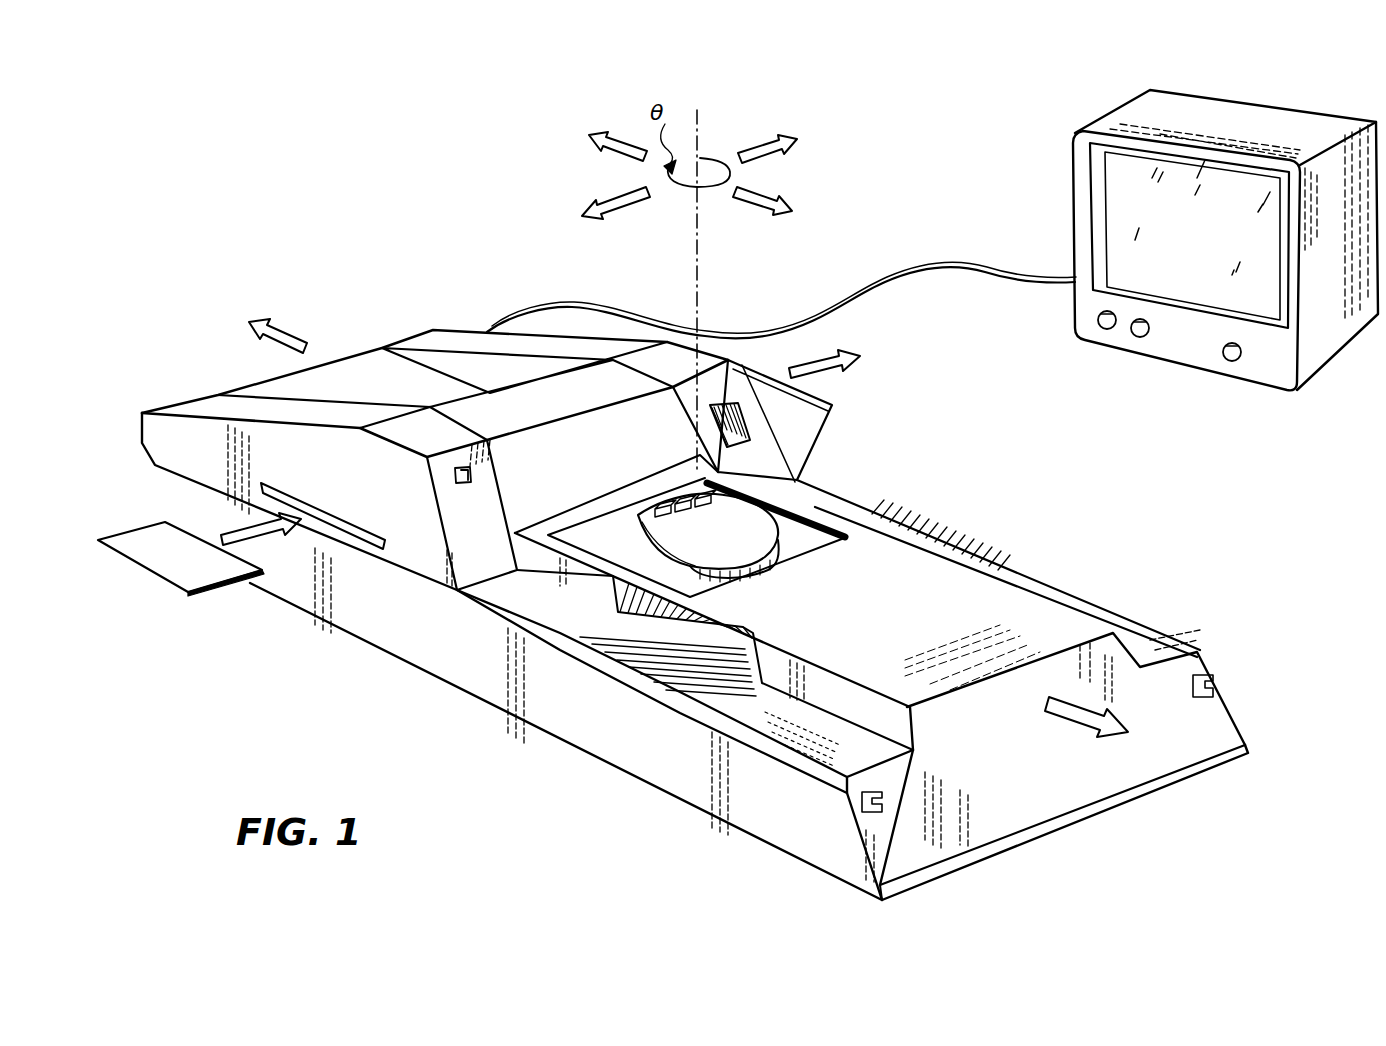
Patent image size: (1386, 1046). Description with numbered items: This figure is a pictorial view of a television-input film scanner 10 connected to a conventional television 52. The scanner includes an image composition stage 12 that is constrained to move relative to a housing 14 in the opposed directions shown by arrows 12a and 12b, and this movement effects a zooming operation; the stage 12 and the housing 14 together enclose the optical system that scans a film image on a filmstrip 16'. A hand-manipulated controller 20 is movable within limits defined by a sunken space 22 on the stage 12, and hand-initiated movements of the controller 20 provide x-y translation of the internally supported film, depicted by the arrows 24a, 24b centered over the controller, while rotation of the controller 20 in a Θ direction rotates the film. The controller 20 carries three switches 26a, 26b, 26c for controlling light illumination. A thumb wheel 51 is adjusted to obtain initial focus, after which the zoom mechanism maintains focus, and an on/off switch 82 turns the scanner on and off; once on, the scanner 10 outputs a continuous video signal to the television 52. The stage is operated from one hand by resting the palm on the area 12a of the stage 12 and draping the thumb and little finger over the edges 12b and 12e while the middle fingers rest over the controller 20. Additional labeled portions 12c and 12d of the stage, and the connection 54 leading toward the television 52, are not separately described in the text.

The television-input film scanner 10 is at (349, 656).
The image composition stage 12 is at (990, 627).
The palm-rest area of the stage 12a is at (295, 330).
The edge of the stage 12b is at (1060, 706).
The top surface of housing 12c is at (850, 602).
The vent grating 12d is at (735, 625).
The edge of the stage 12e is at (870, 504).
The housing 14 is at (1213, 707).
The filmstrip 16' is at (199, 513).
The hand-manipulated controller 20 is at (778, 553).
The sunken space 22 is at (820, 483).
The translation direction arrow 24a is at (632, 150).
The translation direction arrow 24b is at (750, 150).
The switch 26a is at (696, 488).
The switch 26b is at (676, 493).
The switch 26c is at (656, 503).
The thumb wheel 51 is at (770, 428).
The television 52 is at (1075, 172).
The cable 54 is at (853, 293).
The on/off switch 82 is at (478, 472).